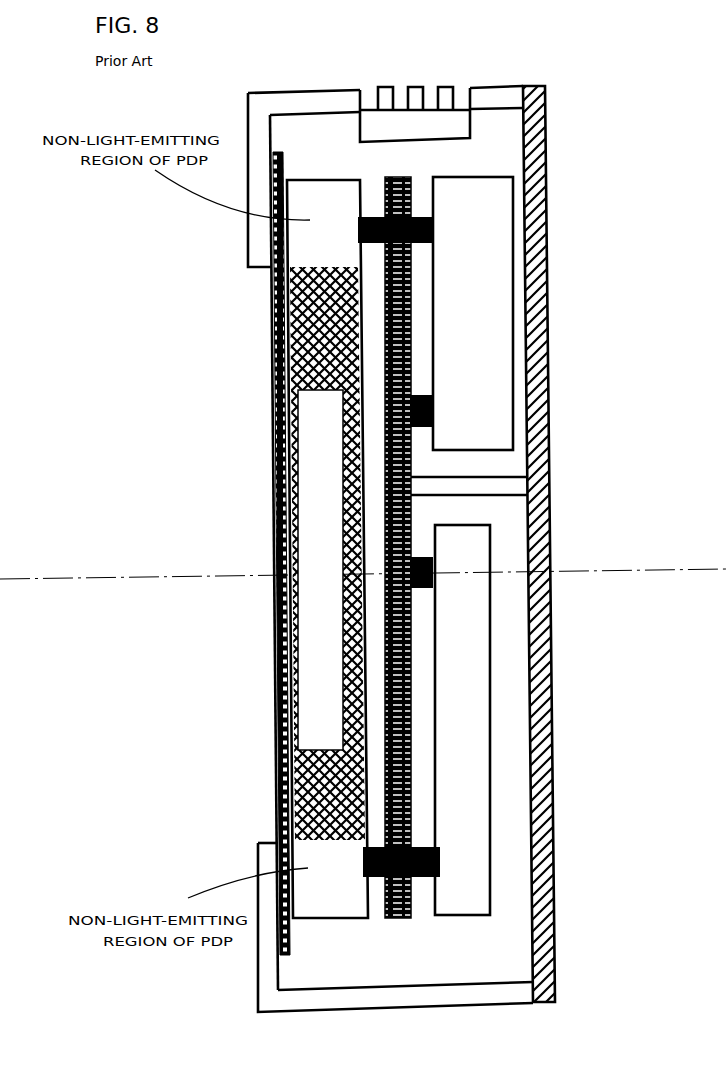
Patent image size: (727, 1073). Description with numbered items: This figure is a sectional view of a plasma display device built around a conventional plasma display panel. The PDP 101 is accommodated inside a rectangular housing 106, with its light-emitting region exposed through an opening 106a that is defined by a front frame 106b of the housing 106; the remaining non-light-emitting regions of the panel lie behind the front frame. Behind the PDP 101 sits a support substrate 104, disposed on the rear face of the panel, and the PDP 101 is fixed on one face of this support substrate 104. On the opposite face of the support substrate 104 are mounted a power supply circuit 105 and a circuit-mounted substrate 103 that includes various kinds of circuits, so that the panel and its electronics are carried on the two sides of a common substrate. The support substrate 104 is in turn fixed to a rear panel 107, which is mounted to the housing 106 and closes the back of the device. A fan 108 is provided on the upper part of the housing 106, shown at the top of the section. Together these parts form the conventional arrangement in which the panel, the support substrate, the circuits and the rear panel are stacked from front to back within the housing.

The PDP 101 is at (347, 918).
The circuit-mounted substrate 103 is at (467, 915).
The support substrate 104 is at (403, 918).
The power supply circuit 105 is at (492, 185).
The housing 106 is at (302, 105).
The opening 106a is at (262, 270).
The front frame 106b is at (257, 241).
The rear panel 107 is at (550, 943).
The fan 108 is at (465, 125).